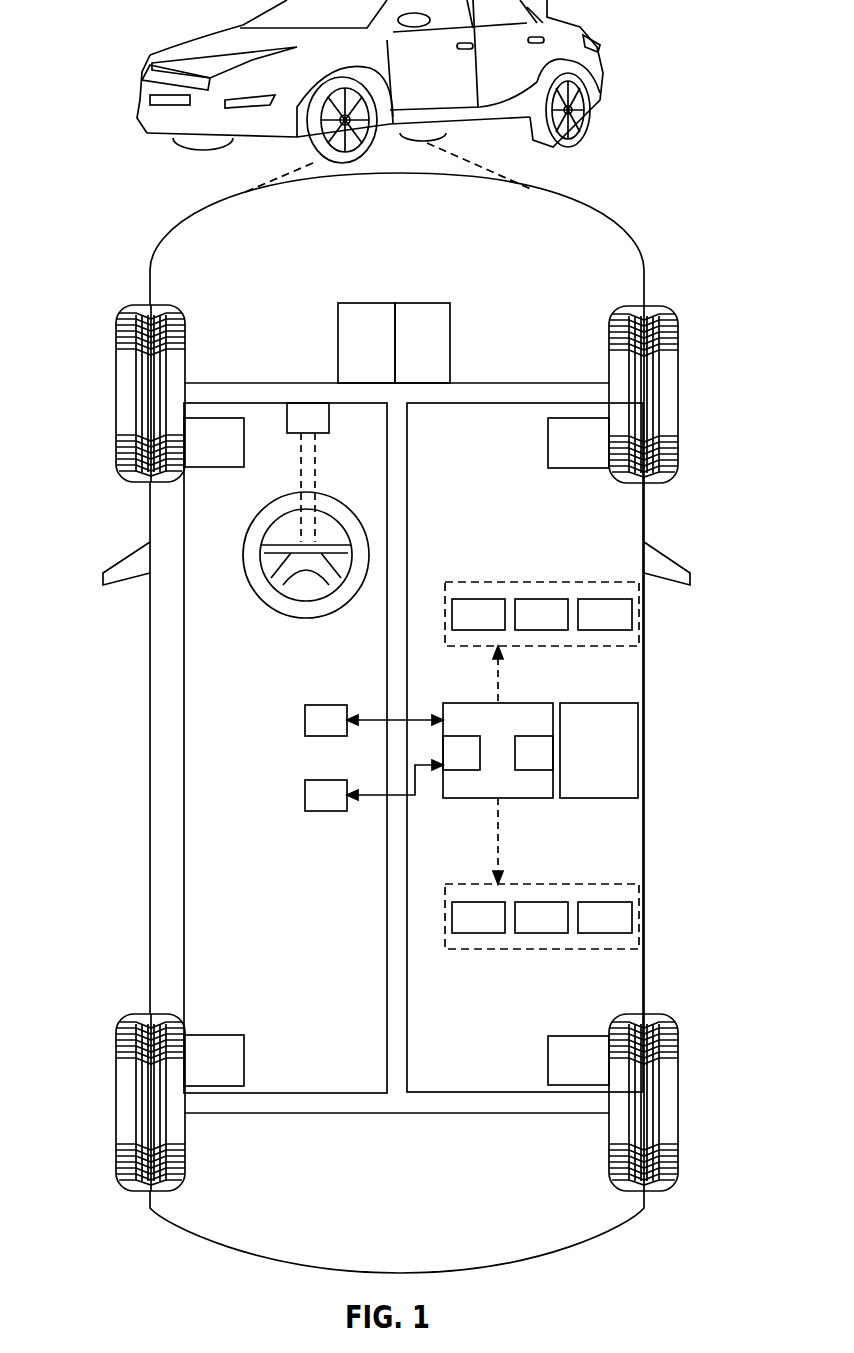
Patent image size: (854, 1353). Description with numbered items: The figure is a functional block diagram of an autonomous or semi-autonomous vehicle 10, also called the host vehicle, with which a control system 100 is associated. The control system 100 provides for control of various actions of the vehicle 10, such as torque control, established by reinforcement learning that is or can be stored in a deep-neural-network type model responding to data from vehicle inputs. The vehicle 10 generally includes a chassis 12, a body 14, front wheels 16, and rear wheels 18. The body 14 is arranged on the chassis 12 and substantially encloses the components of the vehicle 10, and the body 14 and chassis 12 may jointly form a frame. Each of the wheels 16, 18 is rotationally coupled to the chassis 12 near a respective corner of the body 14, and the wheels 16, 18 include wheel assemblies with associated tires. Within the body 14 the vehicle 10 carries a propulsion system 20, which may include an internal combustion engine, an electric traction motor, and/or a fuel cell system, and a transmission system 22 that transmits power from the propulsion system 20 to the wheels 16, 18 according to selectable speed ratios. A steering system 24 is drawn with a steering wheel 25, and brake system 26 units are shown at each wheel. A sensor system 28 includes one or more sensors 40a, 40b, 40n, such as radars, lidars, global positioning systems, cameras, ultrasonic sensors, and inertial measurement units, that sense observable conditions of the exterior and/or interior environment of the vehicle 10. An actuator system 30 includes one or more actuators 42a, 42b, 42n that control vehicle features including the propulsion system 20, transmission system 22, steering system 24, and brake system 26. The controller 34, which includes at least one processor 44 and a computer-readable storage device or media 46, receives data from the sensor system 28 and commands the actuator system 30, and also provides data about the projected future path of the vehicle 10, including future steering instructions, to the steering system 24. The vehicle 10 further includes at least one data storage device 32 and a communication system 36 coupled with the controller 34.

The vehicle 10 is at (135, 80).
The chassis 12 is at (398, 1115).
The body 14 is at (149, 640).
The front wheels 16 is at (112, 380).
The rear wheels 18 is at (112, 1088).
The propulsion system 20 is at (345, 343).
The transmission system 22 is at (440, 343).
The steering system 24 is at (280, 542).
The steering wheel 25 is at (307, 608).
The brake system 26 is at (226, 452).
The sensor system 28 is at (573, 577).
The actuator system 30 is at (570, 882).
The data storage device 32 is at (318, 722).
The controller 34 is at (490, 765).
The communication system 36 is at (590, 715).
The sensor 40a is at (463, 607).
The sensor 40b is at (535, 612).
The sensor 40n is at (625, 616).
The actuator 42a is at (470, 910).
The actuator 42b is at (557, 910).
The actuator 42n is at (625, 921).
The processor 44 is at (473, 763).
The computer-readable storage device or media 46 is at (525, 745).
The control system 100 is at (318, 797).